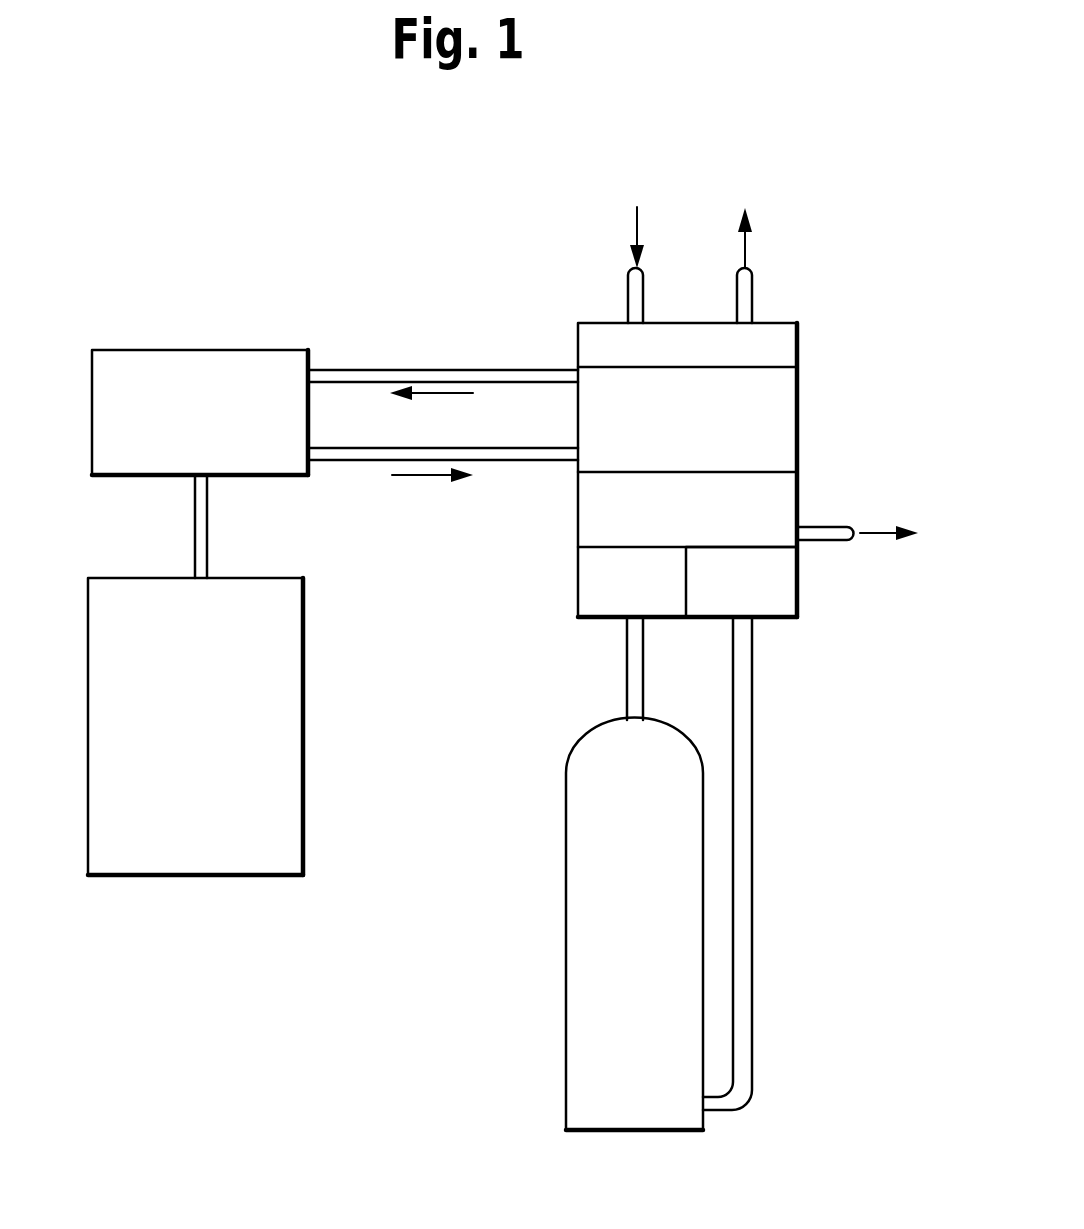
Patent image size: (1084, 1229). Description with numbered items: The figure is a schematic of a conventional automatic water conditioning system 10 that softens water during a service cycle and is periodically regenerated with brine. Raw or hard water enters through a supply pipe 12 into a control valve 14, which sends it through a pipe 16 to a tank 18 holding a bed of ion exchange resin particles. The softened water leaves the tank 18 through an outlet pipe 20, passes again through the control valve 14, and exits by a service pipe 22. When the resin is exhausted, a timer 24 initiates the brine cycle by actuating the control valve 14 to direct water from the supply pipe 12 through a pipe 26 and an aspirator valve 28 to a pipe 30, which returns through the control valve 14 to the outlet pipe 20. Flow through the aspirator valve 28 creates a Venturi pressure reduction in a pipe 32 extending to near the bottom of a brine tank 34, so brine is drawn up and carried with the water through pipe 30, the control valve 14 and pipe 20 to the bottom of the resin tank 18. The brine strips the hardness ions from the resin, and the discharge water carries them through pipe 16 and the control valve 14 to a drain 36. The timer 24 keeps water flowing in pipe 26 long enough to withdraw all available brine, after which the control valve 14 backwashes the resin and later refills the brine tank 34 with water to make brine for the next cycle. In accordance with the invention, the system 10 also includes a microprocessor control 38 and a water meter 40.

The system 10 is at (415, 282).
The supply pipe 12 is at (628, 300).
The control valve 14 is at (798, 492).
The pipe 16 is at (627, 678).
The tank 18 is at (566, 907).
The outlet pipe 20 is at (750, 773).
The service pipe 22 is at (752, 302).
The timer 24 is at (797, 344).
The pipe 26 is at (388, 367).
The aspirator valve 28 is at (92, 435).
The pipe 30 is at (377, 447).
The pipe 32 is at (195, 563).
The brine tank 34 is at (303, 760).
The drain 36 is at (872, 522).
The microprocessor control 38 is at (797, 415).
The water meter 40 is at (797, 583).